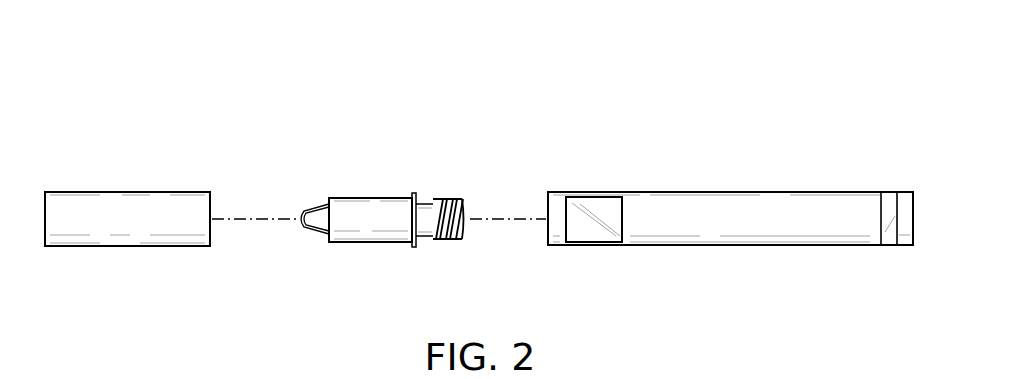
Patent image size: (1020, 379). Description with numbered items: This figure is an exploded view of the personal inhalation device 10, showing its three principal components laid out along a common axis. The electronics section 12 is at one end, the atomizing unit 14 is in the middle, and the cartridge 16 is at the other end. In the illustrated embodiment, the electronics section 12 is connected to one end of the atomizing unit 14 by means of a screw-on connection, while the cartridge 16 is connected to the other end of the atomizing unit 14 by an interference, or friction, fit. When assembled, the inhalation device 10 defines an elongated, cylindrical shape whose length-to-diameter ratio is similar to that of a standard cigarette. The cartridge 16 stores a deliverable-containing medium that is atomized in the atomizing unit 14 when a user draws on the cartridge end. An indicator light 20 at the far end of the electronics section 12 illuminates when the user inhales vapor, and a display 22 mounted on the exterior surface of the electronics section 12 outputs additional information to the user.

The personal inhalation device 10 is at (522, 84).
The electronics section 12 is at (730, 214).
The atomizing unit 14 is at (368, 200).
The cartridge 16 is at (120, 200).
The indicator light 20 is at (889, 232).
The display 22 is at (593, 232).